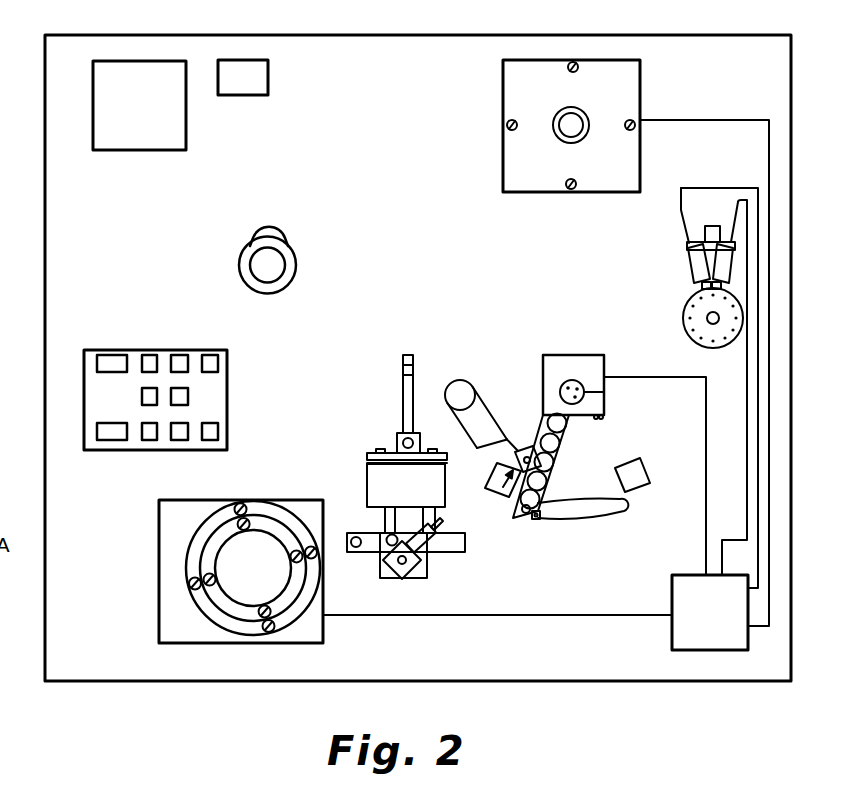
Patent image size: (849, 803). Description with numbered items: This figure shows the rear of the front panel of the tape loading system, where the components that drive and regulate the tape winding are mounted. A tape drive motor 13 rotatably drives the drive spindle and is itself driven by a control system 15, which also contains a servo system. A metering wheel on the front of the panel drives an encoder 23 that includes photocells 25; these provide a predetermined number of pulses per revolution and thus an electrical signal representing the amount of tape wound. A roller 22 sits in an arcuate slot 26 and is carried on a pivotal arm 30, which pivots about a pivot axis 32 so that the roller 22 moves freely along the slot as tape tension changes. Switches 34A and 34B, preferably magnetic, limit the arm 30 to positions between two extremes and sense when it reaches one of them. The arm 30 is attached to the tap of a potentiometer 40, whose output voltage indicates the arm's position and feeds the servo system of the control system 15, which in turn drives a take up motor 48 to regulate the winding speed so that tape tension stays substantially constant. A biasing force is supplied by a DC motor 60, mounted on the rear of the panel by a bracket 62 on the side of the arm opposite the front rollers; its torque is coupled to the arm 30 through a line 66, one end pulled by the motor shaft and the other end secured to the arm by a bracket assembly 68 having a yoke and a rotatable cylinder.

The tape drive motor 13 is at (642, 102).
The control system 15 is at (672, 628).
The roller 22 is at (708, 322).
The encoder 23 is at (684, 315).
The photocells 25 is at (694, 264).
The arcuate slot 26 is at (602, 514).
The pivotal arm 30 is at (570, 462).
The pivot axis 32 is at (565, 387).
The switch 34A is at (637, 488).
The switch 34B is at (498, 504).
The potentiometer 40 is at (578, 358).
The take up motor 48 is at (188, 560).
The DC motor 60 is at (461, 391).
The bracket 62 is at (481, 456).
The line 66 is at (517, 445).
The bracket assembly 68 is at (497, 488).